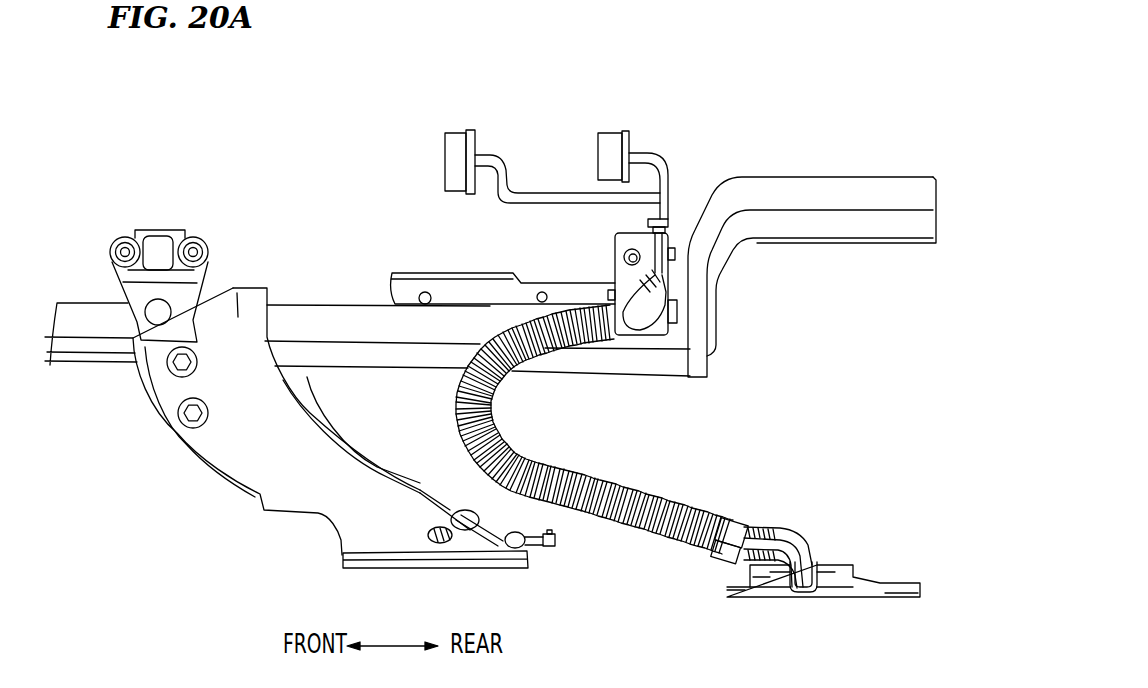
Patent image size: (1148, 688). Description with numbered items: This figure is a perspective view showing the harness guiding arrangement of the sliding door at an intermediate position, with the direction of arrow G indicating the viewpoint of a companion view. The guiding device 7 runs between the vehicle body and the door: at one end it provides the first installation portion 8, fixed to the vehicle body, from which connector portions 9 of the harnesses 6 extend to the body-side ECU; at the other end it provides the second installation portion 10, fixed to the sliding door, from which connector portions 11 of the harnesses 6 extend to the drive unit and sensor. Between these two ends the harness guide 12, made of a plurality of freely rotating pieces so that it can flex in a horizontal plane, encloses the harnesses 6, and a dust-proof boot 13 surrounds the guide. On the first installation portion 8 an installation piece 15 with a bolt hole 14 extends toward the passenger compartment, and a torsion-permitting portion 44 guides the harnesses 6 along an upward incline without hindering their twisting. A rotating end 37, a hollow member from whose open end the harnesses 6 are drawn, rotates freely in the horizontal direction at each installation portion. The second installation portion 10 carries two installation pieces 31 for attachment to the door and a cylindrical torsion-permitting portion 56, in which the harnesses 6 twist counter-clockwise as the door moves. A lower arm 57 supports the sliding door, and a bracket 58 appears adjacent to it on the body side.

The bracket 58 is at (116, 243).
The lower arm 57 is at (217, 453).
The connector portion 9 is at (446, 155).
The harness 6 is at (502, 168).
The installation piece 15 is at (633, 238).
The first installation portion 8 is at (614, 252).
The bolt hole 14 is at (617, 263).
The torsion-permitting portion 44 is at (648, 312).
The guiding device 7 is at (503, 431).
The rotating end 37 is at (607, 330).
The arrow G is at (675, 413).
The connector portion 11 is at (732, 524).
The dust-proof boot 13 is at (594, 537).
The harness guide 12 is at (490, 410).
The installation piece 31 is at (741, 600).
The torsion-permitting portion 56 is at (802, 598).
The second installation portion 10 is at (863, 600).